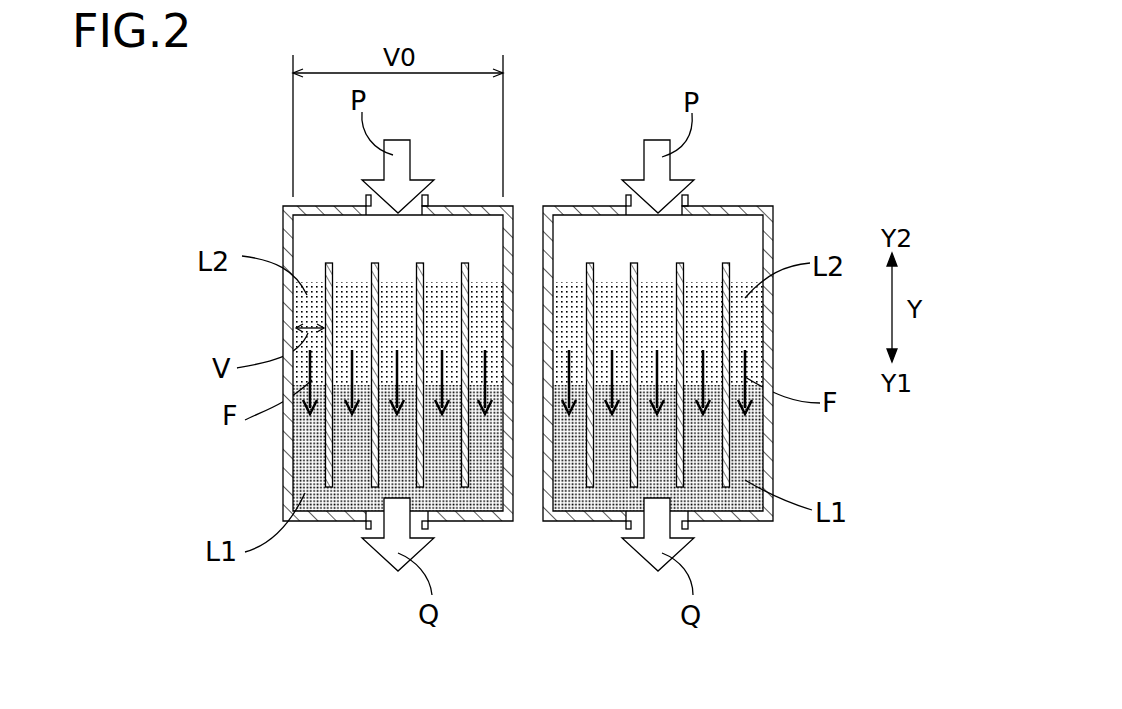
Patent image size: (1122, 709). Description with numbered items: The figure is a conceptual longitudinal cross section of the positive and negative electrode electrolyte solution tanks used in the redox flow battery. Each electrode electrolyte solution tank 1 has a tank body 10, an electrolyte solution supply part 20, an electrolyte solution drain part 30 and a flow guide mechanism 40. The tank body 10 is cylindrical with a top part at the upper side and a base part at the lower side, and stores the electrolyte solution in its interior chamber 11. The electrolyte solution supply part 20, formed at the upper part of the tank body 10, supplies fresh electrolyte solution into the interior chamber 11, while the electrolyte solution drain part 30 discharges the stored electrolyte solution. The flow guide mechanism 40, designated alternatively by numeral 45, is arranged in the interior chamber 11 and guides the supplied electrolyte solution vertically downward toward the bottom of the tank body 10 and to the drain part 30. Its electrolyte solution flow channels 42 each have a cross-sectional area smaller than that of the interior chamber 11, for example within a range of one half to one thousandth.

The electrode electrolyte solution tank 1 is at (310, 142).
The tank body 10 is at (308, 206).
The interior chamber 11 is at (317, 248).
The electrolyte solution supply part 20 is at (428, 207).
The electrolyte solution drain part 30 is at (362, 525).
The flow guide mechanism 40 is at (518, 390).
The electrolyte solution flow channel 42 is at (325, 322).
The filter plate 45 is at (808, 309).